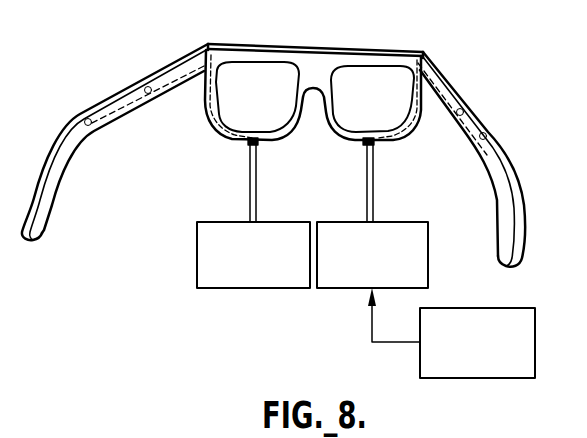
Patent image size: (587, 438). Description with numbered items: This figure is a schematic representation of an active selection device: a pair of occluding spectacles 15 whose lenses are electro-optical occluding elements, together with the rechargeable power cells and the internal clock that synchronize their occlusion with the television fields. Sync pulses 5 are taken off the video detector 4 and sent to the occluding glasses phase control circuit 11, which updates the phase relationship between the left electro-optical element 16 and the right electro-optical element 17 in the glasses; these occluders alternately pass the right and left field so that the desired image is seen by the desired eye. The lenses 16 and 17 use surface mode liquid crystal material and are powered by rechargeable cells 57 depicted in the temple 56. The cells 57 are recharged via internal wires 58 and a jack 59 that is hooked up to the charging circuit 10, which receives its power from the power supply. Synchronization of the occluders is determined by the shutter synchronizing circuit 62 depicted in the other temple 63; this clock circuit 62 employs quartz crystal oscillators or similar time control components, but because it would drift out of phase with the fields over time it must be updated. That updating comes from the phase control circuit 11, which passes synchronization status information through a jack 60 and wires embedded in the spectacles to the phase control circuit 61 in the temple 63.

The video detector 4 is at (523, 312).
The sync pulses 5 is at (397, 388).
The charging circuit 10 is at (284, 221).
The phase control circuit 11 is at (408, 221).
The spectacles 15 is at (358, 50).
The left electro-optical element 16 is at (228, 107).
The right electro-optical element 17 is at (390, 113).
The temple 56 is at (44, 230).
The rechargeable cells 57 is at (135, 94).
The internal wires 58 is at (234, 140).
The jack 59 is at (258, 145).
The jack 60 is at (365, 145).
The phase control circuit 61 is at (382, 142).
The shutter synchronizing circuit 62 is at (490, 123).
The temple 63 is at (523, 225).